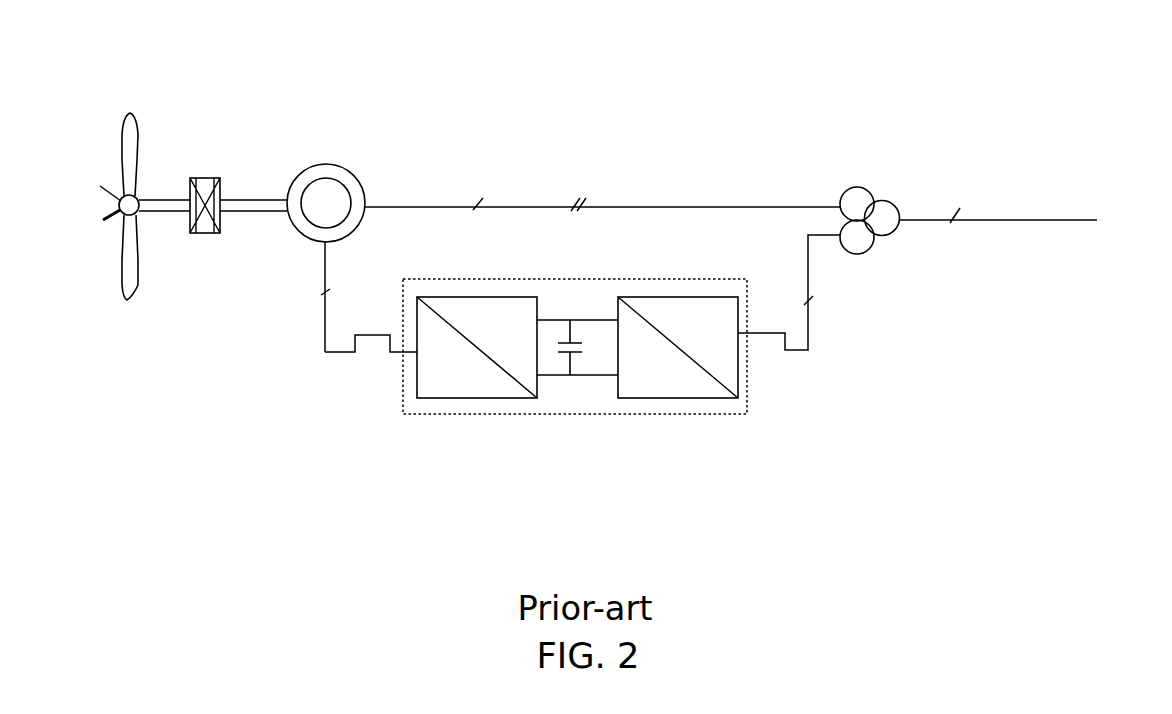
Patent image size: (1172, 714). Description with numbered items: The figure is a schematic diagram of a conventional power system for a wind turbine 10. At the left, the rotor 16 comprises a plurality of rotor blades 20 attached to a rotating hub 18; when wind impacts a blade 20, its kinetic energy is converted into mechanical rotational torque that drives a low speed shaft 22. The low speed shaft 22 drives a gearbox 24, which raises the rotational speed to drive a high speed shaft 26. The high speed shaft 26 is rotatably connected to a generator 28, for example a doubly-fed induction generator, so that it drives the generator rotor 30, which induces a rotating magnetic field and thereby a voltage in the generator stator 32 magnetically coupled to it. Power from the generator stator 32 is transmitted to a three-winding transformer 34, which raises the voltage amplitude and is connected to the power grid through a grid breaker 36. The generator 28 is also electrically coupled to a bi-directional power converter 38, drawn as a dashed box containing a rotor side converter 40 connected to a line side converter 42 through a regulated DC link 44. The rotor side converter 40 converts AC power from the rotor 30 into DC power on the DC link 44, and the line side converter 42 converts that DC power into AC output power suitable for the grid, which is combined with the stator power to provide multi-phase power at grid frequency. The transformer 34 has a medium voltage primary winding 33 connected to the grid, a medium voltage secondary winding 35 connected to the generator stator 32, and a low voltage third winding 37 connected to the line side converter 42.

The wind turbine 10 is at (134, 96).
The rotor 16 is at (119, 212).
The rotating hub 18 is at (105, 180).
The rotor blades 20 is at (137, 143).
The low speed shaft 22 is at (173, 213).
The gearbox 24 is at (200, 177).
The high speed shaft 26 is at (227, 214).
The generator 28 is at (323, 164).
The generator rotor 30 is at (353, 190).
The generator stator 32 is at (313, 243).
The primary winding 33 is at (888, 243).
The three-winding transformer 34 is at (846, 214).
The secondary winding 35 is at (840, 200).
The grid breaker 36 is at (964, 210).
The third winding 37 is at (865, 255).
The bi-directional power converter 38 is at (592, 279).
The rotor side converter 40 is at (467, 400).
The line side converter 42 is at (692, 400).
The DC link 44 is at (584, 357).